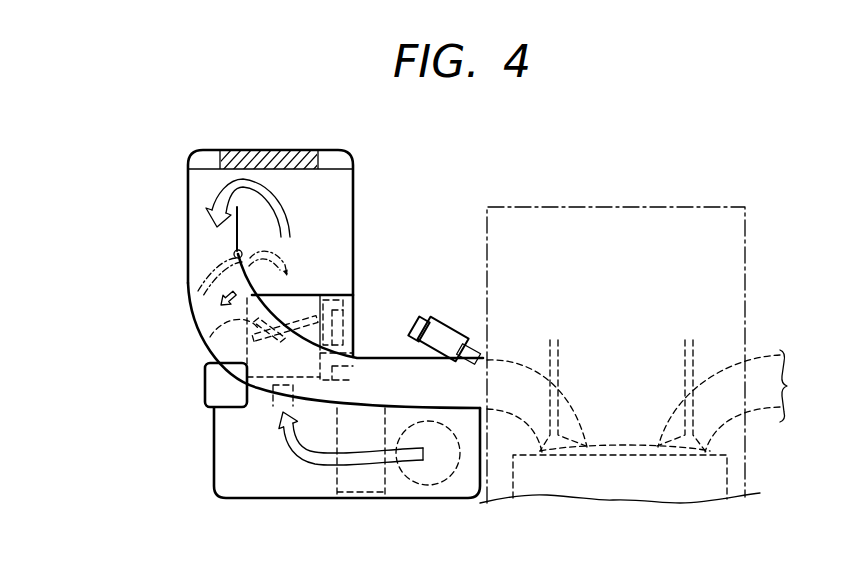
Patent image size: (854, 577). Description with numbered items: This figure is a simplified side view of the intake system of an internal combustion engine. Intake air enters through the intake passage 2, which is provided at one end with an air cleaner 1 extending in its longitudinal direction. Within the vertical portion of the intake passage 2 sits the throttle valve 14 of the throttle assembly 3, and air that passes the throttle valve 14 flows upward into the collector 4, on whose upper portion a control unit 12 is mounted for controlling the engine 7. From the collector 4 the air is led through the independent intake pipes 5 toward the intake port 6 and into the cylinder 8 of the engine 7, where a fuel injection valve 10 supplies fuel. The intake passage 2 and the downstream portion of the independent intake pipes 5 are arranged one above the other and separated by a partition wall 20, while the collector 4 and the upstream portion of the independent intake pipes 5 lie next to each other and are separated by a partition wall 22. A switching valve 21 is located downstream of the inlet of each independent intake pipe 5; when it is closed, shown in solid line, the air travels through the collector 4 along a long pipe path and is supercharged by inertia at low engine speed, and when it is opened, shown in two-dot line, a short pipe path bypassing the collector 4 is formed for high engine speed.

The air cleaner 1 is at (362, 500).
The intake passage 2 is at (263, 470).
The throttle assembly 3 is at (272, 358).
The collector 4 is at (318, 225).
The independent intake pipes 5 is at (197, 257).
The intake port 6 is at (513, 373).
The engine 7 is at (651, 198).
The cylinder 8 is at (713, 484).
The fuel injection valve 10 is at (450, 328).
The control unit 12 is at (258, 152).
The throttle valve 14 is at (210, 337).
The partition wall 20 is at (395, 408).
The switching valve 21 is at (198, 292).
The partition wall 22 is at (237, 237).